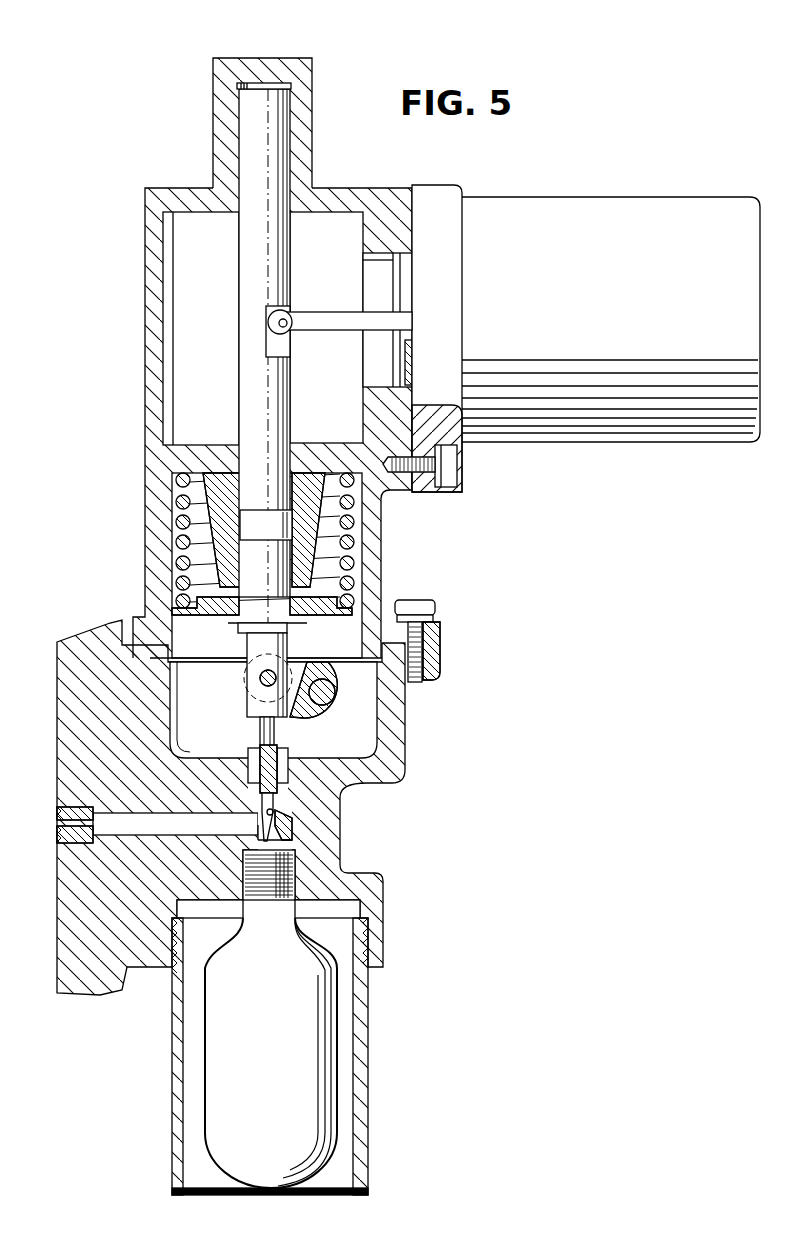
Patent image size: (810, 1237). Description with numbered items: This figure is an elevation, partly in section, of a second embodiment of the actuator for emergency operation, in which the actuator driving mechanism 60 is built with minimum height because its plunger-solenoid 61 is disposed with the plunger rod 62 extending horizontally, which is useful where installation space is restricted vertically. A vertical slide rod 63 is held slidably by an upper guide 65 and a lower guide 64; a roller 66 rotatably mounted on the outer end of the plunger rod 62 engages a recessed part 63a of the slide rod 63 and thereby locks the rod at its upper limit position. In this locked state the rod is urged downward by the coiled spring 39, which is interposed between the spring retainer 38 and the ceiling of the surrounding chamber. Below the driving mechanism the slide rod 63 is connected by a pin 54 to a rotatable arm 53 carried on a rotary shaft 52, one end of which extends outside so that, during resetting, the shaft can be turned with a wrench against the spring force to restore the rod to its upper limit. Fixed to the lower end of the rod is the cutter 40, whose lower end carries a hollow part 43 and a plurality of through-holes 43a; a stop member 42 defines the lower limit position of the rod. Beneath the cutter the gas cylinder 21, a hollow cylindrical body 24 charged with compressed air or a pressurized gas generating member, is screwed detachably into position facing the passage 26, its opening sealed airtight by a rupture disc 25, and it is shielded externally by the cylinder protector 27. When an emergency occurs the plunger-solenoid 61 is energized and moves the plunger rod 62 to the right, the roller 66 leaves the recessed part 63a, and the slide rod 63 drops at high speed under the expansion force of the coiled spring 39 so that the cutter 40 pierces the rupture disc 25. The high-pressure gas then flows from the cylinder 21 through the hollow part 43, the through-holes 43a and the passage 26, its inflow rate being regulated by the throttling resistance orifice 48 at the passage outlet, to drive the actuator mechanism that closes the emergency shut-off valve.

The actuator driving mechanism 60 is at (98, 254).
The guide 65 is at (307, 129).
The plunger-solenoid 61 is at (629, 203).
The slide rod 63 is at (240, 295).
The recessed part 63a is at (272, 348).
The plunger rod 62 is at (331, 312).
The roller 66 is at (284, 333).
The guide 64 is at (310, 537).
The coiled spring 39 is at (340, 580).
The spring retainer 38 is at (213, 615).
The pin 54 is at (263, 678).
The rotatable arm 53 is at (353, 685).
The rotary shaft 52 is at (355, 707).
The cutter 40 is at (280, 732).
The stop member 42 is at (257, 752).
The through-holes 43a is at (285, 812).
The hollow part 43 is at (290, 824).
The passage 26 is at (130, 836).
The throttling resistance orifice 48 is at (57, 822).
The rupture disc 25 is at (258, 855).
The gas cylinder 21 is at (338, 1005).
The cylinder body 24 is at (332, 1043).
The cylinder protector 27 is at (368, 1087).